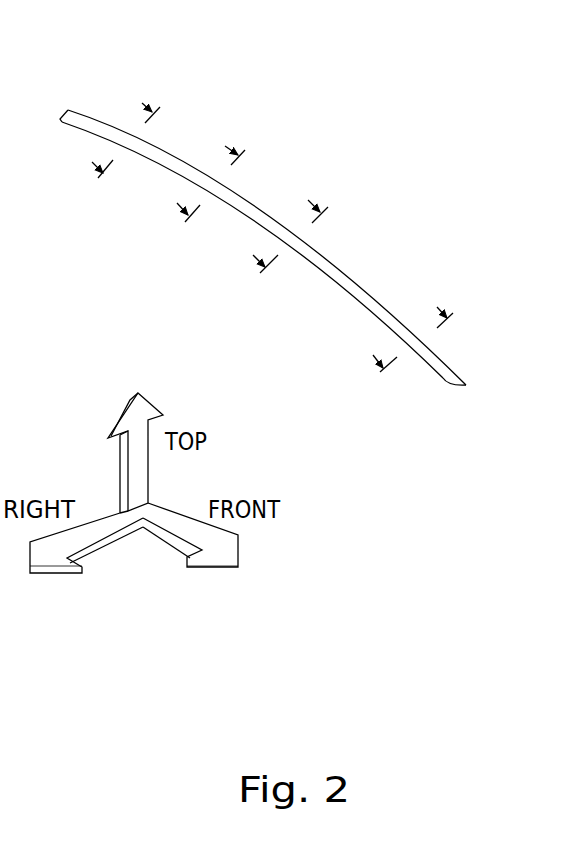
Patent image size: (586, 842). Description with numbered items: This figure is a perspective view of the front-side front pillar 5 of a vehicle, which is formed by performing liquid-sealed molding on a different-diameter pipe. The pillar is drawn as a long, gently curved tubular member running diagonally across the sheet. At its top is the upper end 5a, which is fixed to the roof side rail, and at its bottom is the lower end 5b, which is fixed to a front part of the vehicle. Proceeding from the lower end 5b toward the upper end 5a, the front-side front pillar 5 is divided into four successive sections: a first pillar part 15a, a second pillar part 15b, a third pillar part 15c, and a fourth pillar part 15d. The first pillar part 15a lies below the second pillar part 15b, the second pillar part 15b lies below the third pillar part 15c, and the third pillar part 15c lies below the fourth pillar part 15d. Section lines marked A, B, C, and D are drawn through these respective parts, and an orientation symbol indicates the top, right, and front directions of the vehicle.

The front-side front pillar 5 is at (461, 75).
The upper end 5a is at (62, 117).
The lower end 5b is at (453, 381).
The first pillar part 15a is at (478, 304).
The second pillar part 15b is at (348, 194).
The third pillar part 15c is at (261, 139).
The fourth pillar part 15d is at (178, 91).